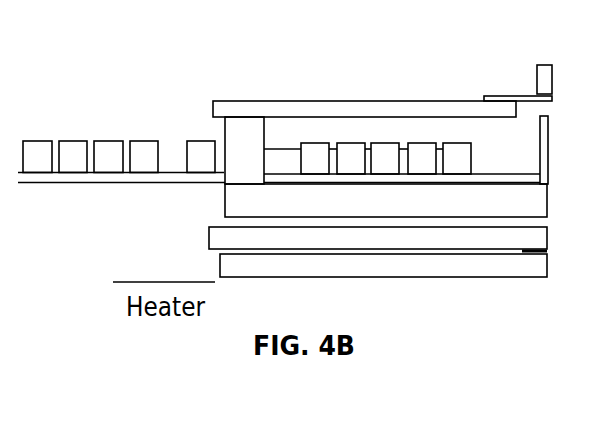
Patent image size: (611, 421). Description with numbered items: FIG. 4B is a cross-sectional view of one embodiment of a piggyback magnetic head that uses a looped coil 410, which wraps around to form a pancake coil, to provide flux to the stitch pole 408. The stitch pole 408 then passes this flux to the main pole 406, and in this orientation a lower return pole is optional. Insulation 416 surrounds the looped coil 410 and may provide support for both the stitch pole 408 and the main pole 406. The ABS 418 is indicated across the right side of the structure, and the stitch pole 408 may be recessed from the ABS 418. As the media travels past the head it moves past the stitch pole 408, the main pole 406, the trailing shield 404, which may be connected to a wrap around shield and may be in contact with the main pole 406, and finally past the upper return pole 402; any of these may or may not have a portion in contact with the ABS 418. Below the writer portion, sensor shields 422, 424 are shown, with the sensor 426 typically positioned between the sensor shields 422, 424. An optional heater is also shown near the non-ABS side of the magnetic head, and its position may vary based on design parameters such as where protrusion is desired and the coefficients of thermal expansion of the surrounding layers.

The upper return pole 402 is at (553, 77).
The trailing shield 404 is at (548, 155).
The main pole 406 is at (520, 95).
The stitch pole 408 is at (388, 99).
The looped coil 410 is at (454, 142).
The insulation 416 is at (434, 210).
The ABS 418 is at (554, 198).
The sensor shield 422 is at (209, 236).
The sensor shield 424 is at (220, 258).
The sensor 426 is at (538, 254).